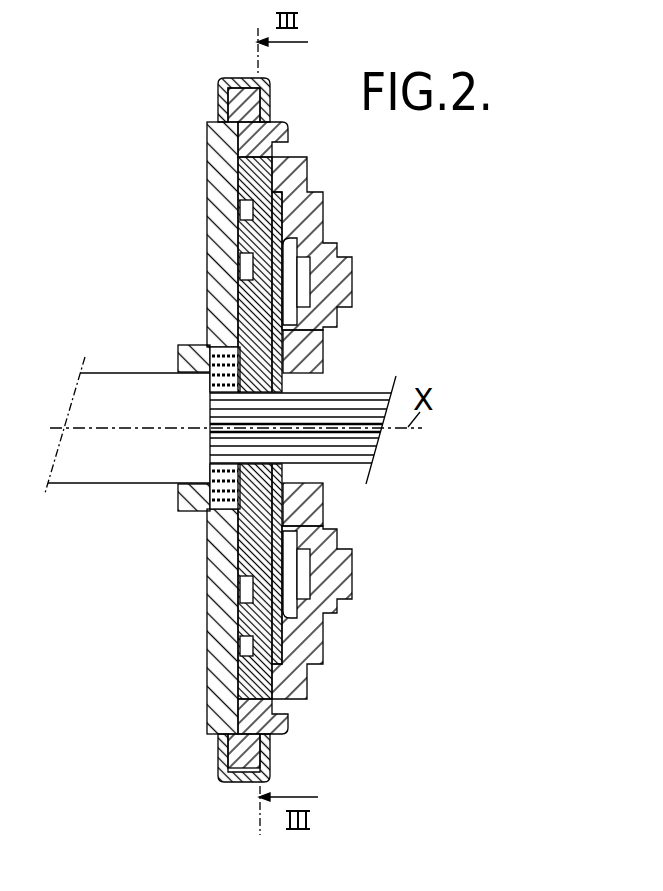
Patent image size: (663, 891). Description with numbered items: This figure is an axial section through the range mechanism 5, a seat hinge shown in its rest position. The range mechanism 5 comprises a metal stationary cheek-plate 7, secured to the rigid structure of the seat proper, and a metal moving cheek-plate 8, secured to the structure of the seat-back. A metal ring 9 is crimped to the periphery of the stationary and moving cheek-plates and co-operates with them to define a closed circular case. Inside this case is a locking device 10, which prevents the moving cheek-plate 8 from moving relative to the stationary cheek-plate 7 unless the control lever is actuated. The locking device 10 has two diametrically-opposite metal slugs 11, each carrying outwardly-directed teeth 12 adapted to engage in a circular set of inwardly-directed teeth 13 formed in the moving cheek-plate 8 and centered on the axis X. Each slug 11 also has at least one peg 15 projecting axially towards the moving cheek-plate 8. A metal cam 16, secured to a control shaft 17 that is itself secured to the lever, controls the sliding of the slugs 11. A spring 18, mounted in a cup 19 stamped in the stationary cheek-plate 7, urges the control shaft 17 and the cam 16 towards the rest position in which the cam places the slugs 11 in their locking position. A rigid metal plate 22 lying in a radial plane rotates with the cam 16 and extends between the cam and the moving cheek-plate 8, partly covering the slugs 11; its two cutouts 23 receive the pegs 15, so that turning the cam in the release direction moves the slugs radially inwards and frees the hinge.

The range mechanism 5 is at (358, 285).
The stationary cheek-plate 7 is at (218, 275).
The moving cheek-plate 8 is at (303, 225).
The metal ring 9 is at (241, 81).
The locking device 10 is at (236, 597).
The slug 11 is at (250, 173).
The outwardly-directed teeth 12 is at (220, 733).
The inwardly-directed teeth 13 is at (253, 143).
The peg 15 is at (283, 266).
The cam 16 is at (253, 502).
The control shaft 17 is at (350, 408).
The spring 18 is at (180, 512).
The cup 19 is at (213, 532).
The rigid metal plate 22 is at (280, 337).
The cutout 23 is at (337, 612).